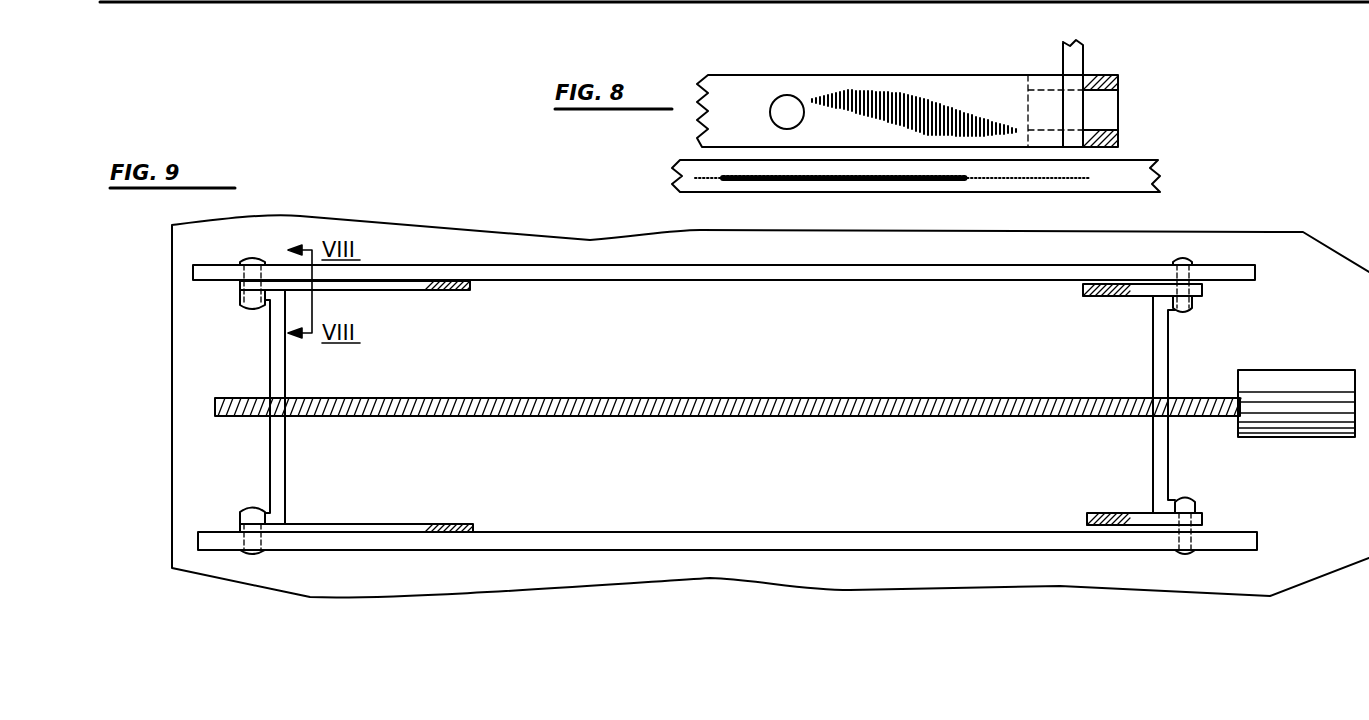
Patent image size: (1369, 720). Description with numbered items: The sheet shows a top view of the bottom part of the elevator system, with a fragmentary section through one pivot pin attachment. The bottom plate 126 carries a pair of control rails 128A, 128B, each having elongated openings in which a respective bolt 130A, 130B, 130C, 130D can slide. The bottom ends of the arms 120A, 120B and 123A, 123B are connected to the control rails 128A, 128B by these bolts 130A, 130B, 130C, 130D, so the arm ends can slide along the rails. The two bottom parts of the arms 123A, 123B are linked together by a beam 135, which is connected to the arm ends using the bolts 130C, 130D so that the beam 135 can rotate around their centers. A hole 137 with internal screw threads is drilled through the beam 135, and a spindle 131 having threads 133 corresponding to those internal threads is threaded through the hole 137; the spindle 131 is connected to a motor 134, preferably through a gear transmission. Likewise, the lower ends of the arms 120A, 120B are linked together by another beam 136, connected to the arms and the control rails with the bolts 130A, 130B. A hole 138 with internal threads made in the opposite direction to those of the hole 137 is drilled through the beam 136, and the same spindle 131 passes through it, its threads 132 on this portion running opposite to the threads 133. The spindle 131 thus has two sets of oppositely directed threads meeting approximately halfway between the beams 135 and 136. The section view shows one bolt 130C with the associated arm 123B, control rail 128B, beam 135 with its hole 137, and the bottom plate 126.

In FIG. 9, the arm 120A is at (1140, 512).
In FIG. 9, the arm 120B is at (1138, 293).
In FIG. 9, the arm 123A is at (398, 524).
In FIG. 8, the arm 123B is at (1075, 54).
In FIG. 9, the arm 123B is at (384, 291).
In FIG. 8, the bottom plate 126 is at (1152, 170).
In FIG. 9, the bottom plate 126 is at (742, 566).
In FIG. 9, the control rail 128A is at (675, 534).
In FIG. 8, the control rail 128B is at (1120, 112).
In FIG. 9, the control rail 128B is at (682, 282).
In FIG. 9, the bolt 130A is at (1190, 554).
In FIG. 9, the bolt 130B is at (1180, 258).
In FIG. 8, the bolt 130C is at (1024, 130).
In FIG. 9, the bolt 130C is at (250, 260).
In FIG. 9, the bolt 130D is at (255, 554).
In FIG. 9, the spindle 131 is at (727, 418).
In FIG. 9, the threads 132 is at (975, 410).
In FIG. 9, the threads 133 is at (676, 403).
In FIG. 9, the motor 134 is at (1290, 390).
In FIG. 8, the beam 135 is at (845, 95).
In FIG. 9, the beam 135 is at (285, 458).
In FIG. 9, the beam 136 is at (1153, 343).
In FIG. 8, the hole 137 is at (780, 104).
In FIG. 9, the hole 137 is at (280, 405).
In FIG. 9, the hole 138 is at (1160, 410).